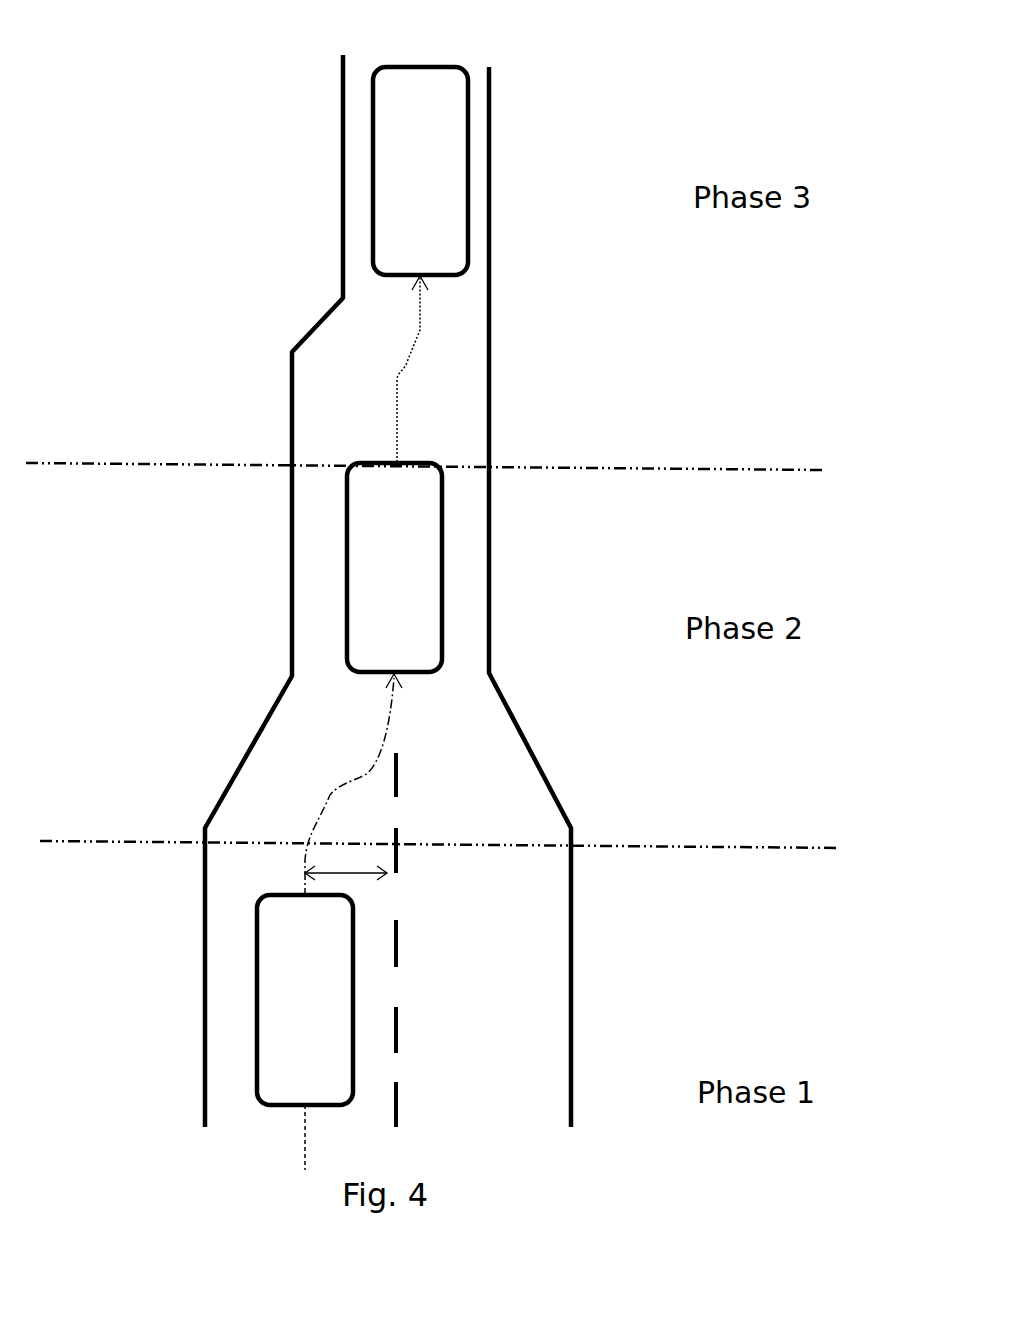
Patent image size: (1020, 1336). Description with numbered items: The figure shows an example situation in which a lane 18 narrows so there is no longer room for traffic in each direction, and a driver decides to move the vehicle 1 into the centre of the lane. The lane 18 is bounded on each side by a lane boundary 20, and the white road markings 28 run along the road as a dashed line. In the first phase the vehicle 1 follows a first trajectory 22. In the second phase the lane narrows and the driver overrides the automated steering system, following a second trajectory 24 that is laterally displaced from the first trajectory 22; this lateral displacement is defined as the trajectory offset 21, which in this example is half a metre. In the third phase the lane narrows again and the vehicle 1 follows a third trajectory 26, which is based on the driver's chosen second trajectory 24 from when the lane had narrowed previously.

The vehicle 1 is at (362, 586).
The lane 18 is at (452, 417).
The lane boundary 20 is at (290, 675).
The trajectory offset 21 is at (343, 867).
The first trajectory 22 is at (305, 1138).
The second trajectory 24 is at (313, 812).
The third trajectory 26 is at (420, 330).
The white road markings 28 is at (397, 851).